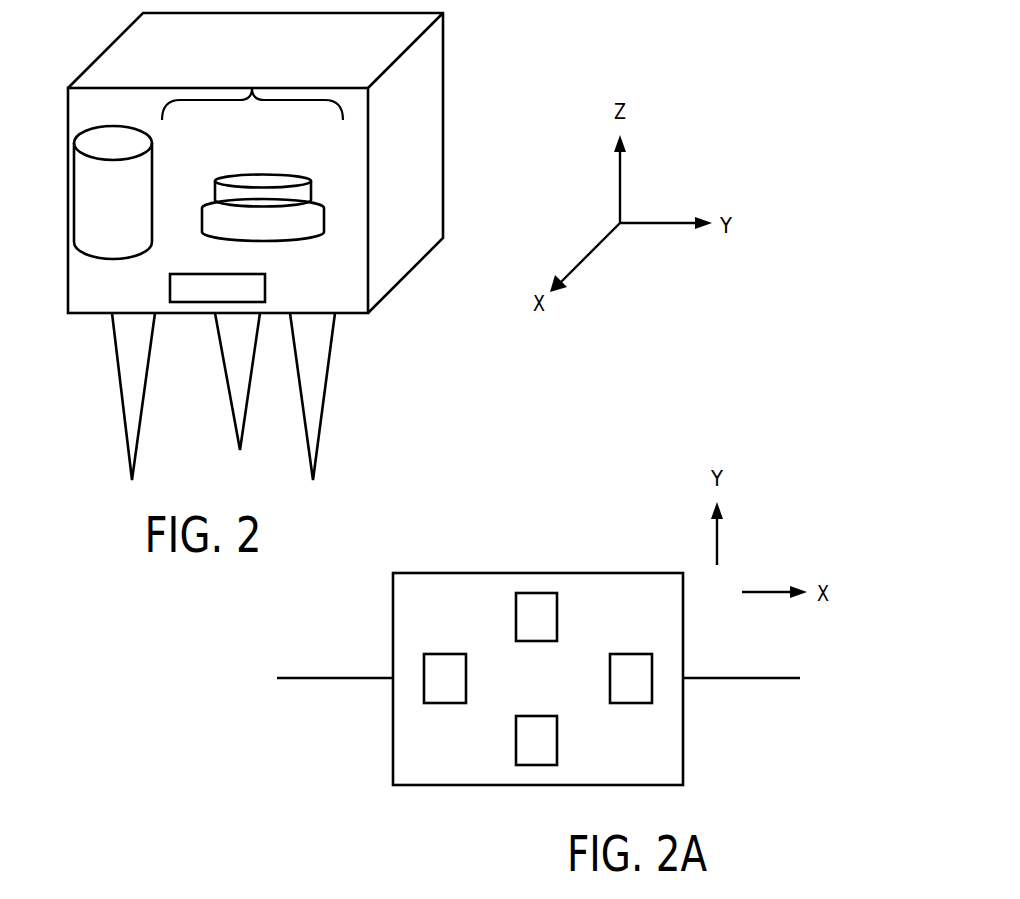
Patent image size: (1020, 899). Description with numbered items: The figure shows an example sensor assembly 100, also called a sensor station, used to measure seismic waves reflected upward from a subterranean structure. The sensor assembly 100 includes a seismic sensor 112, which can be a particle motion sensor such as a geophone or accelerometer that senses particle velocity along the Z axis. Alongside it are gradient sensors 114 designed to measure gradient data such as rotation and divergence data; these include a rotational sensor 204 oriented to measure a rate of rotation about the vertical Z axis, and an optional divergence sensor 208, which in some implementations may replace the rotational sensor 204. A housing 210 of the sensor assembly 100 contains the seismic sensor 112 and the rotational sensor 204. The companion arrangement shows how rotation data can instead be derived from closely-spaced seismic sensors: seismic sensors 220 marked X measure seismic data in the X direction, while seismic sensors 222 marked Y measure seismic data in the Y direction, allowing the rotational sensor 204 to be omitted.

In FIG. 2, the sensor assembly 100 is at (492, 26).
In FIG. 2, the seismic sensor 112 is at (84, 128).
In FIG. 2, the gradient sensors 114 is at (252, 88).
In FIG. 2, the rotational sensor 204 is at (312, 234).
In FIG. 2, the divergence sensor 208 is at (218, 304).
In FIG. 2, the housing 210 is at (407, 280).
In FIG. 2A, the seismic sensors 220 is at (560, 615).
In FIG. 2A, the seismic sensors 222 is at (444, 654).